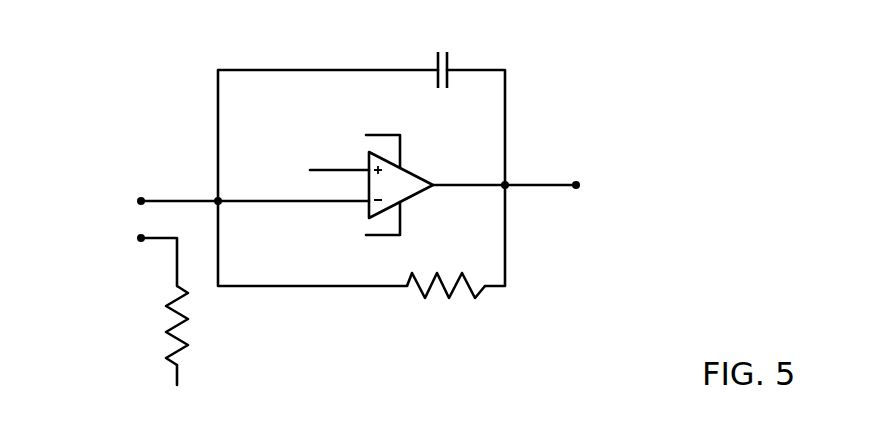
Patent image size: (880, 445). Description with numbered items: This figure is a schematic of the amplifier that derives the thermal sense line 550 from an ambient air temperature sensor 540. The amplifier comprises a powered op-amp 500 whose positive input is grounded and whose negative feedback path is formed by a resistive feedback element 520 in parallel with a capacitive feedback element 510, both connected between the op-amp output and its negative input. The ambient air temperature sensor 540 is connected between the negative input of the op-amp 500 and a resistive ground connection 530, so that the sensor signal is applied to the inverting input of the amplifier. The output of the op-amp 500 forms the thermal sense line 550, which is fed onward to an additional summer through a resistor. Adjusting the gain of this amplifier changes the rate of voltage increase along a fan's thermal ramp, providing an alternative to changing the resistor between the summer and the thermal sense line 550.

The powered op-amp 500 is at (417, 194).
The capacitive negative feedback 510 is at (445, 47).
The resistive negative feedback 520 is at (438, 300).
The resistive ground connection 530 is at (163, 315).
The ambient air temperature sensor 540 is at (72, 187).
The thermal sense line 550 is at (557, 183).